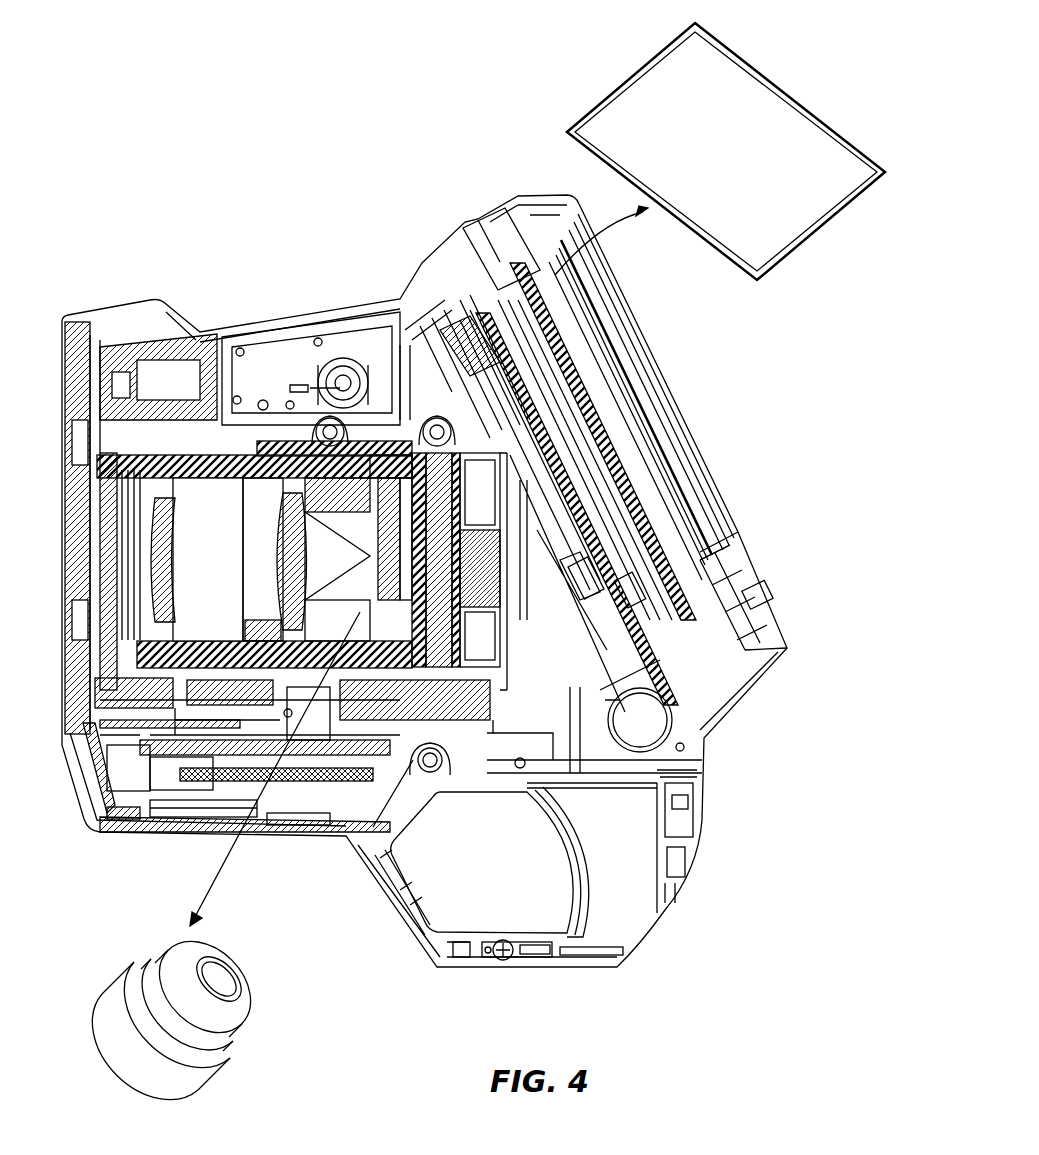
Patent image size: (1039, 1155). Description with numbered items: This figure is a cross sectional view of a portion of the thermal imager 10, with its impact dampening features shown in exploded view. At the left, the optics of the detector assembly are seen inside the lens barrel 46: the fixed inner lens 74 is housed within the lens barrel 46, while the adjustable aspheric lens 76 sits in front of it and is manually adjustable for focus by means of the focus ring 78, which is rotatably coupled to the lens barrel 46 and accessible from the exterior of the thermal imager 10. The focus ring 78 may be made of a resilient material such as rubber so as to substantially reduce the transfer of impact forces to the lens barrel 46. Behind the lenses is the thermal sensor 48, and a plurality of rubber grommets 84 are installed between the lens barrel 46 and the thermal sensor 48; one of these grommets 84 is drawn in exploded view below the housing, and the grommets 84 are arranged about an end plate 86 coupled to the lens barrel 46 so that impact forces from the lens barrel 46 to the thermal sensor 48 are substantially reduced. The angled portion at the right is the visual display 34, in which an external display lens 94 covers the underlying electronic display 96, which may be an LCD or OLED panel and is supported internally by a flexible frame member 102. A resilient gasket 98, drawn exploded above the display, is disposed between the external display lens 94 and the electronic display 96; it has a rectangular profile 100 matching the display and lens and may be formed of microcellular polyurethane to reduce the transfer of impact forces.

The thermal imager 10 is at (222, 158).
The visual display 34 is at (641, 397).
The lens barrel 46 is at (214, 455).
The thermal sensor 48 is at (397, 470).
The fixed inner lens 74 is at (287, 557).
The adjustable aspheric lens 76 is at (167, 557).
The focus ring 78 is at (110, 693).
The rubber grommet 84 is at (243, 1000).
The end plate 86 is at (350, 610).
The external display lens 94 is at (648, 443).
The electronic display 96 is at (650, 490).
The resilient gasket 98 is at (761, 57).
The rectangular profile 100 is at (800, 105).
The flexible frame member 102 is at (527, 293).